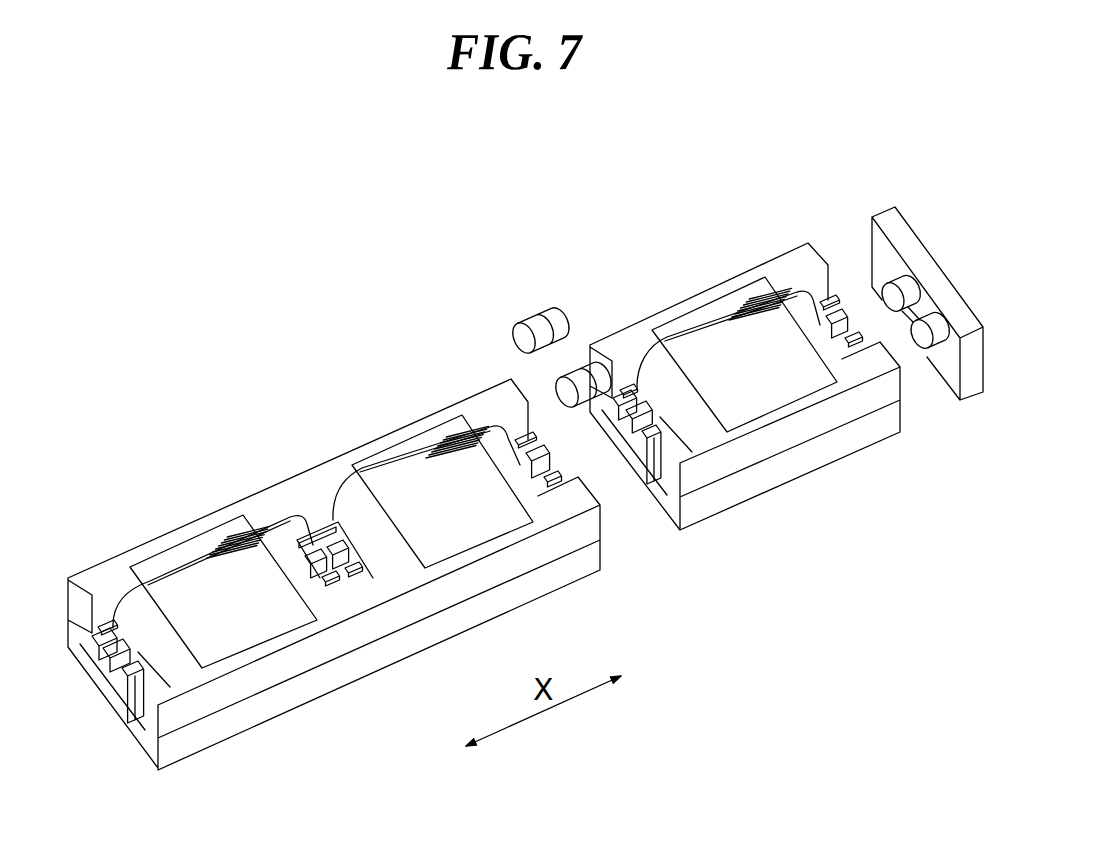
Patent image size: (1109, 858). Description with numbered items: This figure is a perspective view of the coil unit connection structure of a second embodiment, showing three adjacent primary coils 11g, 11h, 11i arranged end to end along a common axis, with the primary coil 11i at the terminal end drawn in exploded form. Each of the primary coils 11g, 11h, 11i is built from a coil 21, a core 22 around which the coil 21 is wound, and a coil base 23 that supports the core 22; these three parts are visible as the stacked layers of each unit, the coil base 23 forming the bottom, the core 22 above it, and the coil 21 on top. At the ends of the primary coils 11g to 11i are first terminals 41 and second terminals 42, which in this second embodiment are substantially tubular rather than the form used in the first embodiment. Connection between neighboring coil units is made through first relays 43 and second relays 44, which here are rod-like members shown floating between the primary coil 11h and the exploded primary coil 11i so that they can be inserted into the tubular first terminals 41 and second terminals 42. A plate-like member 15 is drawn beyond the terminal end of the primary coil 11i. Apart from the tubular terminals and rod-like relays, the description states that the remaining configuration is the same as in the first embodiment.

The primary coil 11g is at (185, 523).
The primary coil 11h is at (400, 427).
The primary coil 11i is at (693, 290).
The end plate 15 is at (898, 200).
The coil 21 is at (220, 627).
The core 22 is at (267, 633).
The coil base 23 is at (337, 677).
The first terminal 41 is at (113, 627).
The second terminal 42 is at (125, 688).
The first relay 43 is at (532, 322).
The second relay 44 is at (583, 395).